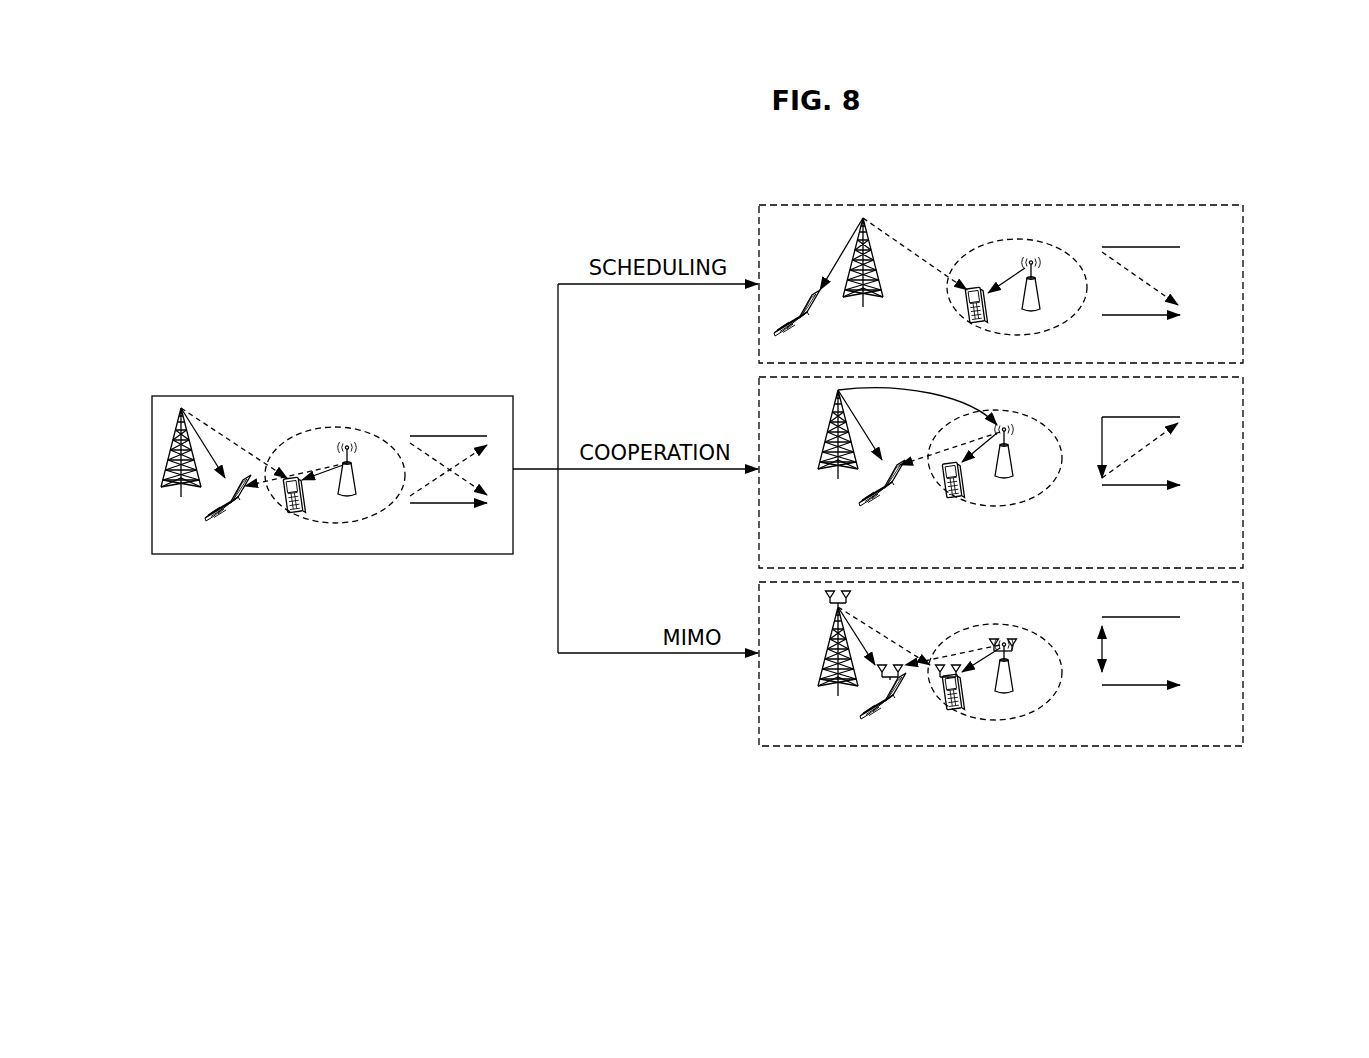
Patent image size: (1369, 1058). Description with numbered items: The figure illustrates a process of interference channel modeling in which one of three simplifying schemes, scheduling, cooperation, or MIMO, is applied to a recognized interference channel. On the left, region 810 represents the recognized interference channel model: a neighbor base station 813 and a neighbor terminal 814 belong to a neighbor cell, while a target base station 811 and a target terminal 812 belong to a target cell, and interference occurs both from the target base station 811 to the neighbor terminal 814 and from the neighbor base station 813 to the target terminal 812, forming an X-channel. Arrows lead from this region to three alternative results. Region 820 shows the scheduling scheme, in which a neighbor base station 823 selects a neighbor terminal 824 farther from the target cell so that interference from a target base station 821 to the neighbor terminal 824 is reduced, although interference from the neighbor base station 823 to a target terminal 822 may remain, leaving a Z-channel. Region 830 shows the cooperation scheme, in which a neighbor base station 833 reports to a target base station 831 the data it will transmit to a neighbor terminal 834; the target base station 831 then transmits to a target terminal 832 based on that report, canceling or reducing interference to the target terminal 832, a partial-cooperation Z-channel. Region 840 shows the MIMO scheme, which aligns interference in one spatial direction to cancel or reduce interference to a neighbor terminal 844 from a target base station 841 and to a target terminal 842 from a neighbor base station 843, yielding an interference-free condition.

The region 810 is at (332, 396).
The target base station 811 is at (349, 495).
The target terminal 812 is at (300, 517).
The neighbor base station 813 is at (172, 442).
The neighbor terminal 814 is at (230, 515).
The region 820 is at (1243, 283).
The target base station 821 is at (1038, 278).
The target terminal 822 is at (975, 290).
The neighbor base station 823 is at (883, 300).
The neighbor terminal 824 is at (797, 292).
The region 830 is at (1243, 463).
The target base station 831 is at (1008, 478).
The target terminal 832 is at (955, 495).
The neighbor base station 833 is at (830, 468).
The neighbor terminal 834 is at (887, 495).
The region 840 is at (1243, 654).
The target base station 841 is at (1010, 694).
The target terminal 842 is at (950, 710).
The neighbor base station 843 is at (832, 690).
The neighbor terminal 844 is at (887, 712).